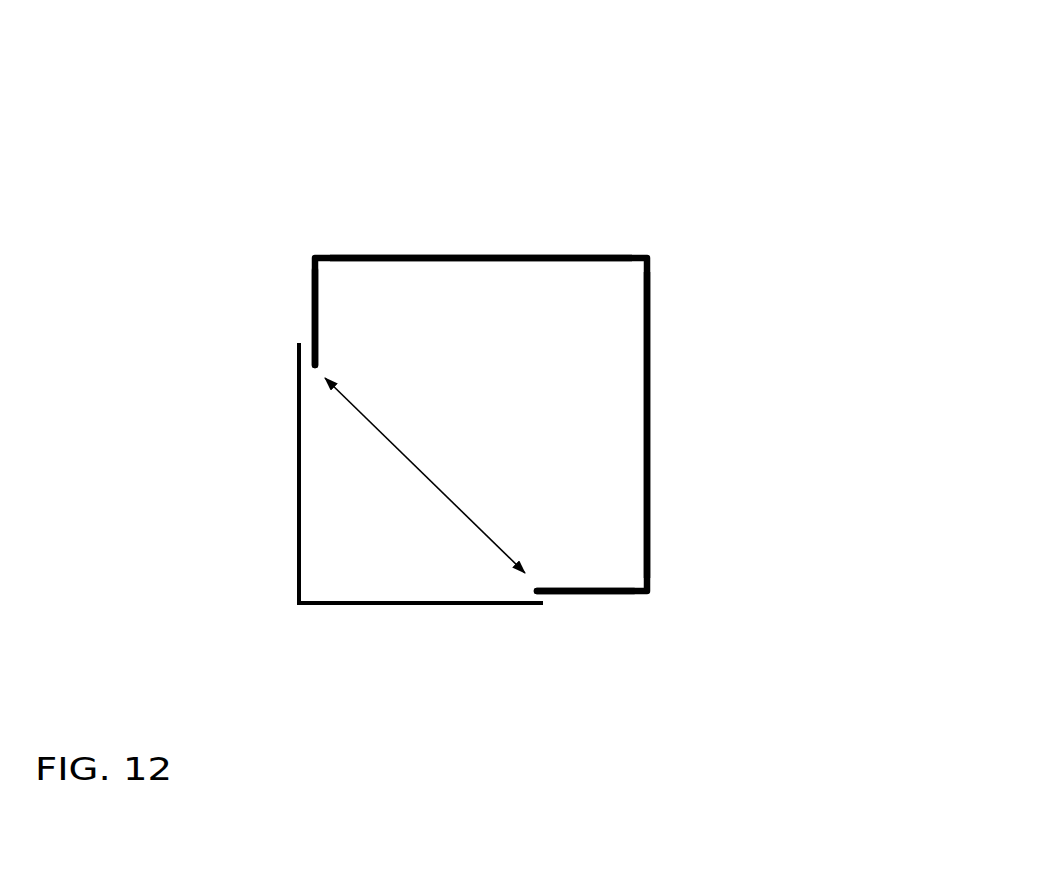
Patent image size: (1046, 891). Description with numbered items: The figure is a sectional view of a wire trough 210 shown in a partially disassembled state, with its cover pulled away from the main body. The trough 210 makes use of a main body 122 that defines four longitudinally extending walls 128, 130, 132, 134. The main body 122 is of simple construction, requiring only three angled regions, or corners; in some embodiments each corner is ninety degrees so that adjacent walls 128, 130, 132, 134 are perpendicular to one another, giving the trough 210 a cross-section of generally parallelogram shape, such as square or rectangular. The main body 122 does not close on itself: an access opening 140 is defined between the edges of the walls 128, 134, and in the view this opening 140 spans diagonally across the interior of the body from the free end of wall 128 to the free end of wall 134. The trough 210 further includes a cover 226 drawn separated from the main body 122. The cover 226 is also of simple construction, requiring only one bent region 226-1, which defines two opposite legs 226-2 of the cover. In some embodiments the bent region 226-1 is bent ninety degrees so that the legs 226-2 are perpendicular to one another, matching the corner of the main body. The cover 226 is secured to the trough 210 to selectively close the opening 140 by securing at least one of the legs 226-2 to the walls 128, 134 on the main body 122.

The trough 210 is at (722, 192).
The main body 122 is at (548, 243).
The wall 130 is at (468, 256).
The wall 128 is at (304, 293).
The wall 132 is at (650, 408).
The wall 134 is at (594, 595).
The access opening 140 is at (463, 508).
The cover 226 is at (273, 555).
The bent region 226-1 is at (301, 600).
The legs 226-2 is at (297, 403).